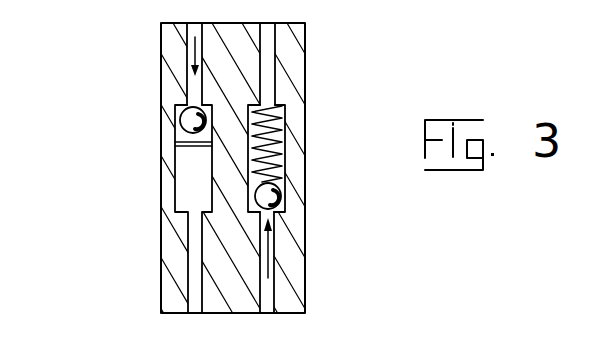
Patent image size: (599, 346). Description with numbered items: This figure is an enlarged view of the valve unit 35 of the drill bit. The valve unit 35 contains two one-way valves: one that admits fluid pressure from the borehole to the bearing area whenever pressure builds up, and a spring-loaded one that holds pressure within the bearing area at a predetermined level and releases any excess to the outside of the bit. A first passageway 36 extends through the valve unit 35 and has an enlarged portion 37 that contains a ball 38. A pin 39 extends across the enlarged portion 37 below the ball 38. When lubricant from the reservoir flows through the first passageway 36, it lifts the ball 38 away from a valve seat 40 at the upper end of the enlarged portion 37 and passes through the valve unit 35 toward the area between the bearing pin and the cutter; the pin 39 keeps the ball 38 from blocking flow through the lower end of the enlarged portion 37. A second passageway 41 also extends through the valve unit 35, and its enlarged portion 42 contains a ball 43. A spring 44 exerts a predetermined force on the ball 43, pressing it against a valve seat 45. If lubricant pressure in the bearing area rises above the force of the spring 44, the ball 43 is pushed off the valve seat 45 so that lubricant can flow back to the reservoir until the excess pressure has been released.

The valve unit 35 is at (96, 163).
The first passageway 36 is at (190, 268).
The enlarged portion of the first passageway 37 is at (212, 146).
The ball 38 is at (176, 134).
The pin 39 is at (186, 146).
The valve seat 40 is at (190, 104).
The second passageway 41 is at (272, 67).
The enlarged portion of the second passageway 42 is at (279, 167).
The ball 43 is at (279, 203).
The spring 44 is at (280, 117).
The valve seat 45 is at (270, 217).